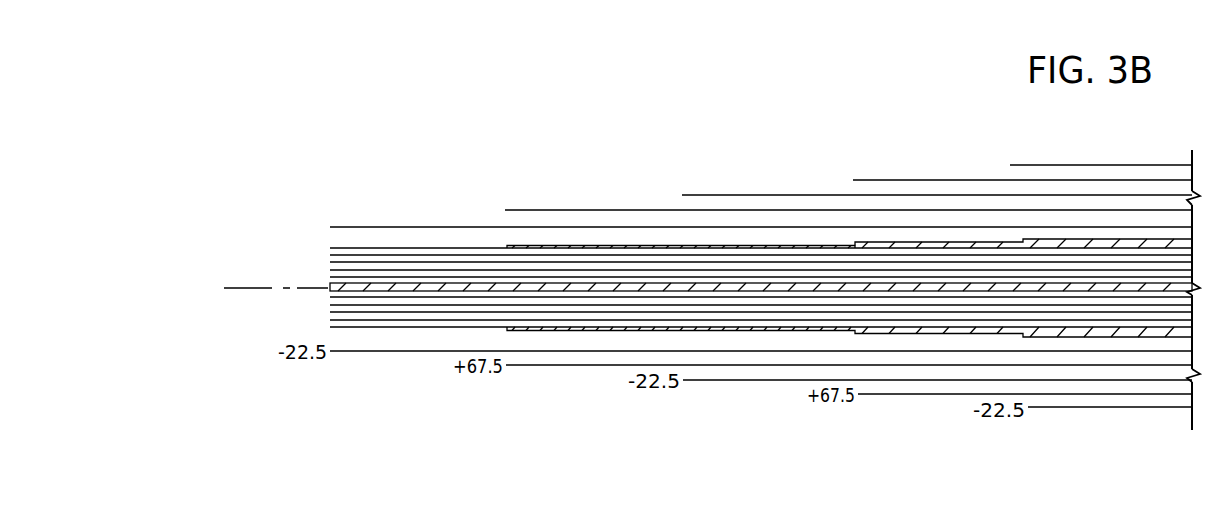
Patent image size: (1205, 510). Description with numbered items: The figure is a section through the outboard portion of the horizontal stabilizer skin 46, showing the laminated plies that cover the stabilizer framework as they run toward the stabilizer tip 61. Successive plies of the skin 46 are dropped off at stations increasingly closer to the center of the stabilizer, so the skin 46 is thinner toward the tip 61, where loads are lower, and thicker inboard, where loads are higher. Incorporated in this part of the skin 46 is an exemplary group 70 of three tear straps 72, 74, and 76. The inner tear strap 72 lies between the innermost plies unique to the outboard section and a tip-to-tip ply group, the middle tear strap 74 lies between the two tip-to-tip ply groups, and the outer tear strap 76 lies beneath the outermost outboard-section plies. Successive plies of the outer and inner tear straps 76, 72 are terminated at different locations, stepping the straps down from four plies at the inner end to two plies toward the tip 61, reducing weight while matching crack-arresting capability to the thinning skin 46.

The skin 46 is at (923, 176).
The tip 61 is at (318, 272).
The group of tear straps 70 is at (762, 236).
The tear strap 72 is at (562, 332).
The tear strap 74 is at (559, 283).
The tear strap 76 is at (582, 246).